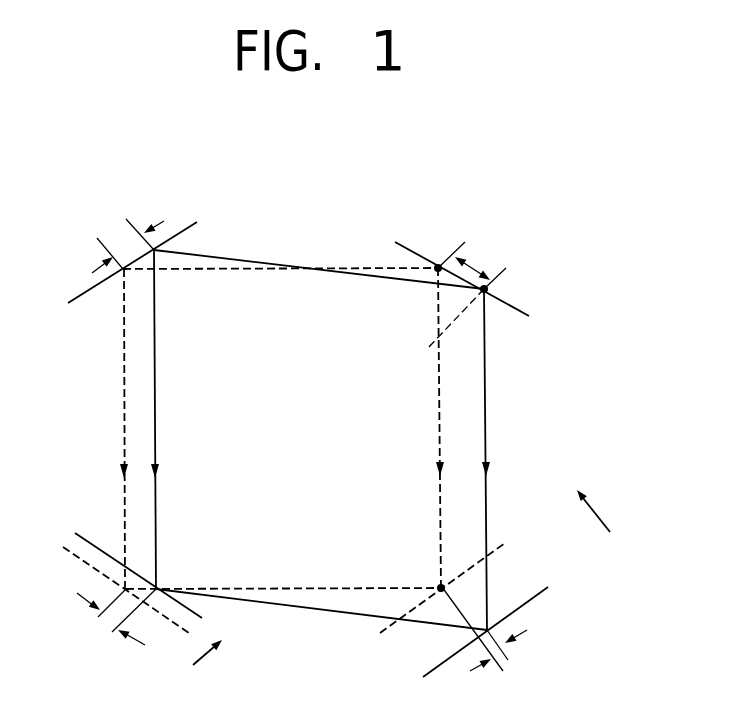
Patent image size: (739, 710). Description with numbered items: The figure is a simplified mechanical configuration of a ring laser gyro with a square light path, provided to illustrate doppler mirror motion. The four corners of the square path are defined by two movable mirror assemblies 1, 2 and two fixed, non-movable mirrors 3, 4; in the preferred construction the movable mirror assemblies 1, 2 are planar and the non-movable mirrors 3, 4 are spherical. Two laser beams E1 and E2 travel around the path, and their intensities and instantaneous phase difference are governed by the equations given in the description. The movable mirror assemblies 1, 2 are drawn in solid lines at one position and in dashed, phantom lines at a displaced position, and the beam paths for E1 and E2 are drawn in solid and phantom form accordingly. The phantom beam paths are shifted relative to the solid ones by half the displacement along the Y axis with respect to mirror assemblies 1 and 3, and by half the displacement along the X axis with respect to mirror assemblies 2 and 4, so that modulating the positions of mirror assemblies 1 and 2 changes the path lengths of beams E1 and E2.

The movable mirror assembly 1 is at (75, 533).
The movable mirror assembly 2 is at (497, 548).
The fixed mirror 3 is at (410, 243).
The fixed mirror 4 is at (180, 232).
The beam E1 is at (440, 497).
The beam E2 is at (123, 443).
The x axis of displacement X is at (207, 657).
The y axis of displacement Y is at (595, 510).